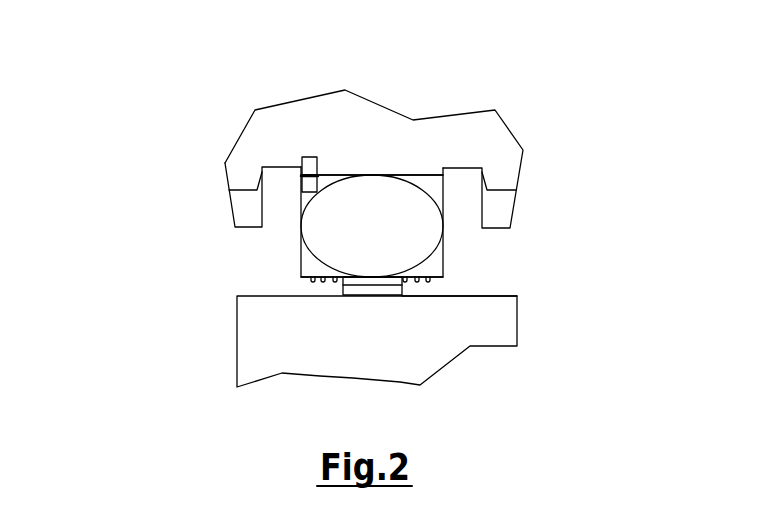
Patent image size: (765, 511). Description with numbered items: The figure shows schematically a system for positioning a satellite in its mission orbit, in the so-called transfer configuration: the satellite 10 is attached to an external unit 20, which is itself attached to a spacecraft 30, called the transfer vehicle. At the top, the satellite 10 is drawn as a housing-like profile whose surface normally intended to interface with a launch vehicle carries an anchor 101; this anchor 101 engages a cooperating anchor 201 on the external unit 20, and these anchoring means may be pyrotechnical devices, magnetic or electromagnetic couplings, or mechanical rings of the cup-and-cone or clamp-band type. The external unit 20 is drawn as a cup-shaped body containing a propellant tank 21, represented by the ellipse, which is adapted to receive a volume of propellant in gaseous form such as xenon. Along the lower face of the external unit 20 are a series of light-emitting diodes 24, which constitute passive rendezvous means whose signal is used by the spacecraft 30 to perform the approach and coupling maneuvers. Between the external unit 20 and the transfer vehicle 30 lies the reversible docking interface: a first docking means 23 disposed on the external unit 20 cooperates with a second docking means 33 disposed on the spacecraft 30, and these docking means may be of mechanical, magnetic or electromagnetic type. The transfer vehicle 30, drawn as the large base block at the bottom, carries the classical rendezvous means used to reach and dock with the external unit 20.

The satellite 10 is at (507, 122).
The external unit 20 is at (300, 258).
The propellant tank 21 is at (418, 188).
The first docking means 23 is at (402, 283).
The light-emitting diodes 24 is at (300, 278).
The spacecraft (transfer vehicle) 30 is at (253, 347).
The second docking means 33 is at (405, 293).
The anchor 101 is at (300, 165).
The anchor 201 is at (300, 177).